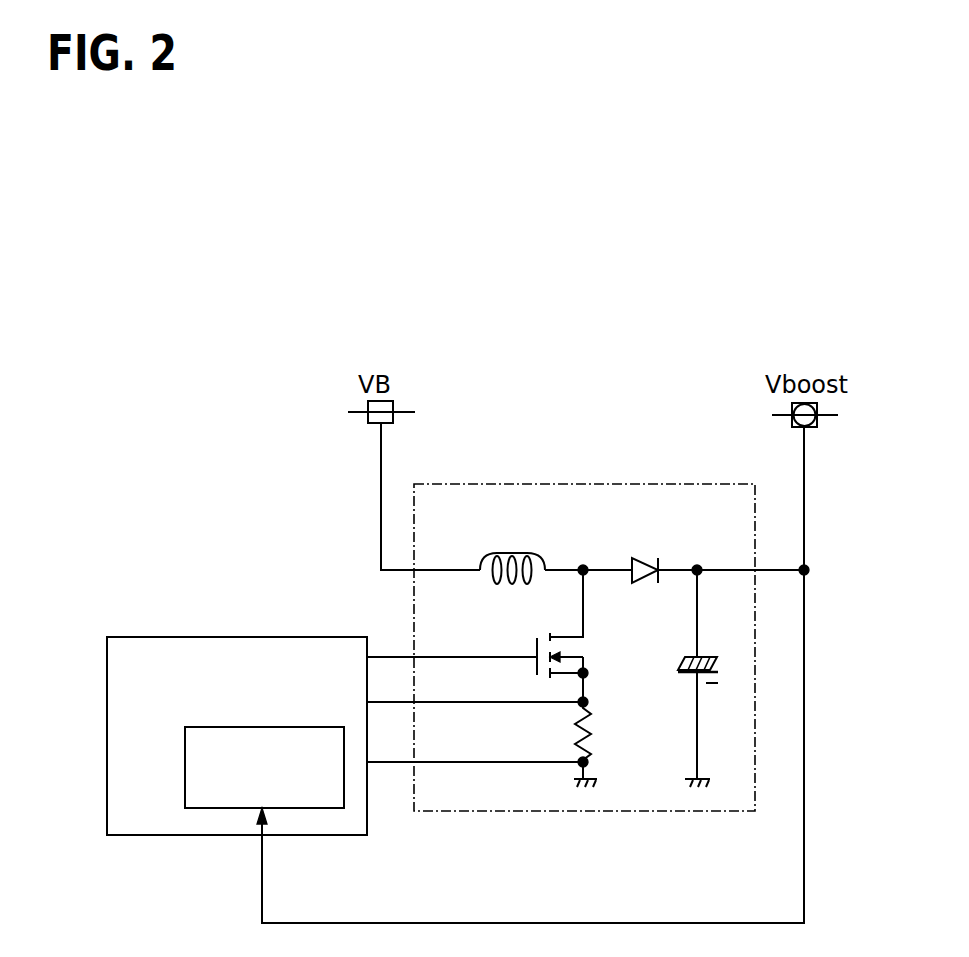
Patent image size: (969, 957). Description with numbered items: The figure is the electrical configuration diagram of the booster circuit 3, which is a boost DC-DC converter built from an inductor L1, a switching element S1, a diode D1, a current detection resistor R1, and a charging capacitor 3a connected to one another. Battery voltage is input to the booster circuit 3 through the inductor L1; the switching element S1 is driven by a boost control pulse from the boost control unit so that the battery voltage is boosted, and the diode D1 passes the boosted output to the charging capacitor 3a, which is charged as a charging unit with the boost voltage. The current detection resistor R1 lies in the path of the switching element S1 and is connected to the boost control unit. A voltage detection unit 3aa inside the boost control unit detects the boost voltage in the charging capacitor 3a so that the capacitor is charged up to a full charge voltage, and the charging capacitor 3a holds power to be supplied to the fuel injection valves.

The booster circuit 3 is at (615, 484).
The charging capacitor 3a is at (218, 637).
The voltage detection unit 3aa is at (184, 770).
The inductor L1 is at (504, 553).
The diode D1 is at (646, 561).
The switching element S1 is at (539, 645).
The current detection resistor R1 is at (589, 737).